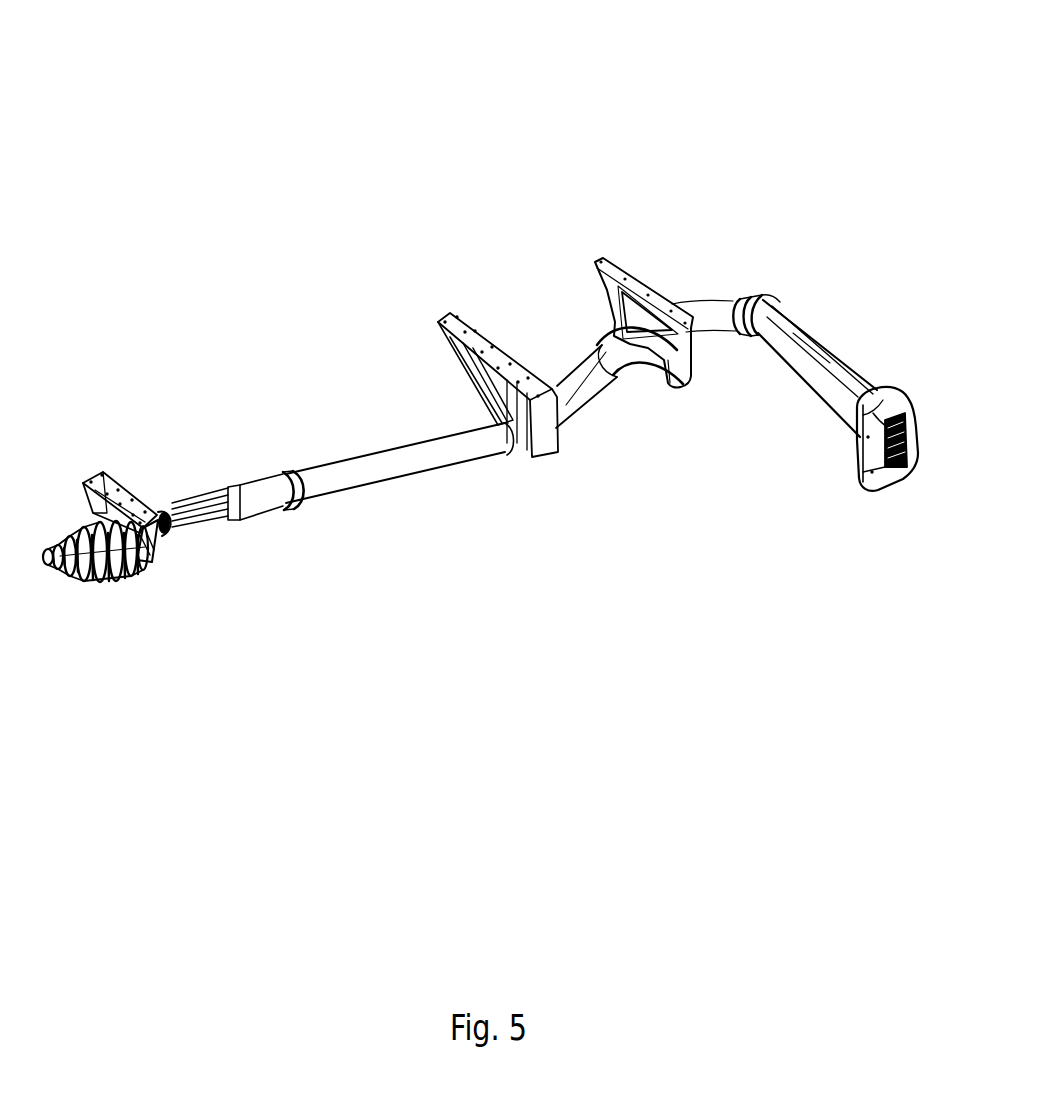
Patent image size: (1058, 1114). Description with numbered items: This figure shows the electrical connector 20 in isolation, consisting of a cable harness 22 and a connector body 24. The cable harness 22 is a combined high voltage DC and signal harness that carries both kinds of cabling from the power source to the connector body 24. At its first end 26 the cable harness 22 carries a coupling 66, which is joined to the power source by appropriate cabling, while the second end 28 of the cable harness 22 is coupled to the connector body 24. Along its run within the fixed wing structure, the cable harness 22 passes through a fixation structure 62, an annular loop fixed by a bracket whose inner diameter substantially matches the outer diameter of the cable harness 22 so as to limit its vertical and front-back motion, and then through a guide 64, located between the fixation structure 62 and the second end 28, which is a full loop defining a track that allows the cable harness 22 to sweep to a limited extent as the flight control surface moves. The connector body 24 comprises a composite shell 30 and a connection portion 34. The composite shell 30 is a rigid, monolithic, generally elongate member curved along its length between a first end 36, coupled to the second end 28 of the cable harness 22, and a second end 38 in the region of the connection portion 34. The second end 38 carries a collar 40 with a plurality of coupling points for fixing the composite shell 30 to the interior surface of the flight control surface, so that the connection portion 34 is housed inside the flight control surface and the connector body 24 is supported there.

The electrical connector 20 is at (320, 180).
The cable harness 22 is at (370, 468).
The connector body 24 is at (829, 292).
The first end 26 is at (202, 484).
The second end 28 is at (727, 290).
The composite shell 30 is at (812, 387).
The connection portion 34 is at (893, 490).
The first end 36 is at (739, 360).
The second end 38 is at (886, 360).
The collar 40 is at (889, 404).
The fixation structure 62 is at (508, 476).
The guide 64 is at (642, 400).
The coupling 66 is at (137, 566).